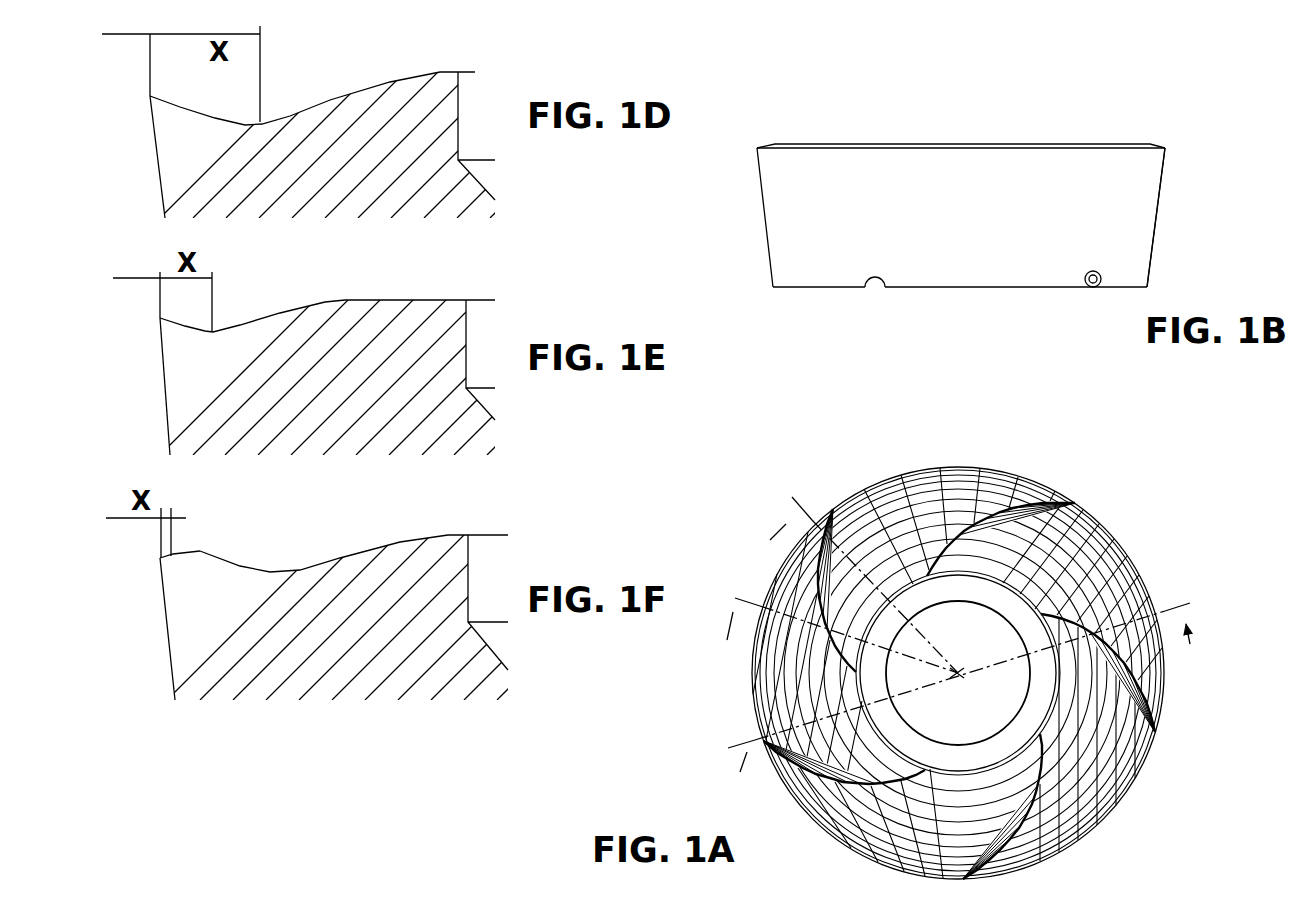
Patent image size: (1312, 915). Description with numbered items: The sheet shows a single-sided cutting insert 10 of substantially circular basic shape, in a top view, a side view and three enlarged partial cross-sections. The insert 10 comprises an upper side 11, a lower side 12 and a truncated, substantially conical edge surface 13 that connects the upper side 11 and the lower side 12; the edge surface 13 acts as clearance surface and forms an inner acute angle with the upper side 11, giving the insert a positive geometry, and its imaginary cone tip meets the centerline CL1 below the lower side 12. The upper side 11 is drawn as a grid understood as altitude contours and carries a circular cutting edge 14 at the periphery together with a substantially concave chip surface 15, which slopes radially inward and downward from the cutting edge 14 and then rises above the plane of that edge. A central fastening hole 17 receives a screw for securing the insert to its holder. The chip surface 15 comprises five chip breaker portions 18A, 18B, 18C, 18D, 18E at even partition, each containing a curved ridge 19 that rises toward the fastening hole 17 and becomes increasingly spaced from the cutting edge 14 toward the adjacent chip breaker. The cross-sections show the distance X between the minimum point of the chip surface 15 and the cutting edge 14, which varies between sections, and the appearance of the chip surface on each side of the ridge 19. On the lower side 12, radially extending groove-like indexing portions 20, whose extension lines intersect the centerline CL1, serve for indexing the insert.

In FIG. 1B, the cutting insert 10 is at (1162, 132).
In FIG. 1A, the cutting insert 10 is at (951, 640).
In FIG. 1B, the upper side 11 is at (1046, 130).
In FIG. 1A, the upper side 11 is at (1072, 563).
In FIG. 1B, the lower side 12 is at (932, 288).
In FIG. 1B, the edge surface 13 is at (1160, 208).
In FIG. 1D, the cutting edge 14 is at (150, 96).
In FIG. 1E, the cutting edge 14 is at (160, 318).
In FIG. 1F, the cutting edge 14 is at (160, 558).
In FIG. 1A, the cutting edge 14 is at (918, 478).
In FIG. 1D, the chip surface 15 is at (220, 117).
In FIG. 1E, the chip surface 15 is at (215, 330).
In FIG. 1F, the chip surface 15 is at (173, 556).
In FIG. 1A, the chip surface 15 is at (772, 672).
In FIG. 1A, the fastening hole 17 is at (1018, 722).
In FIG. 1A, the chip breaker portion 18A is at (1032, 808).
In FIG. 1A, the chip breaker portion 18B is at (823, 775).
In FIG. 1A, the chip breaker portion 18C is at (818, 586).
In FIG. 1A, the chip breaker portion 18D is at (1012, 508).
In FIG. 1A, the chip breaker portion 18E is at (1150, 678).
In FIG. 1E, the ridge 19 is at (335, 300).
In FIG. 1F, the ridge 19 is at (205, 550).
In FIG. 1A, the ridge 19 is at (978, 506).
In FIG. 1B, the indexing portions 20 is at (1093, 287).
In FIG. 1A, the centerline CL1 is at (956, 670).